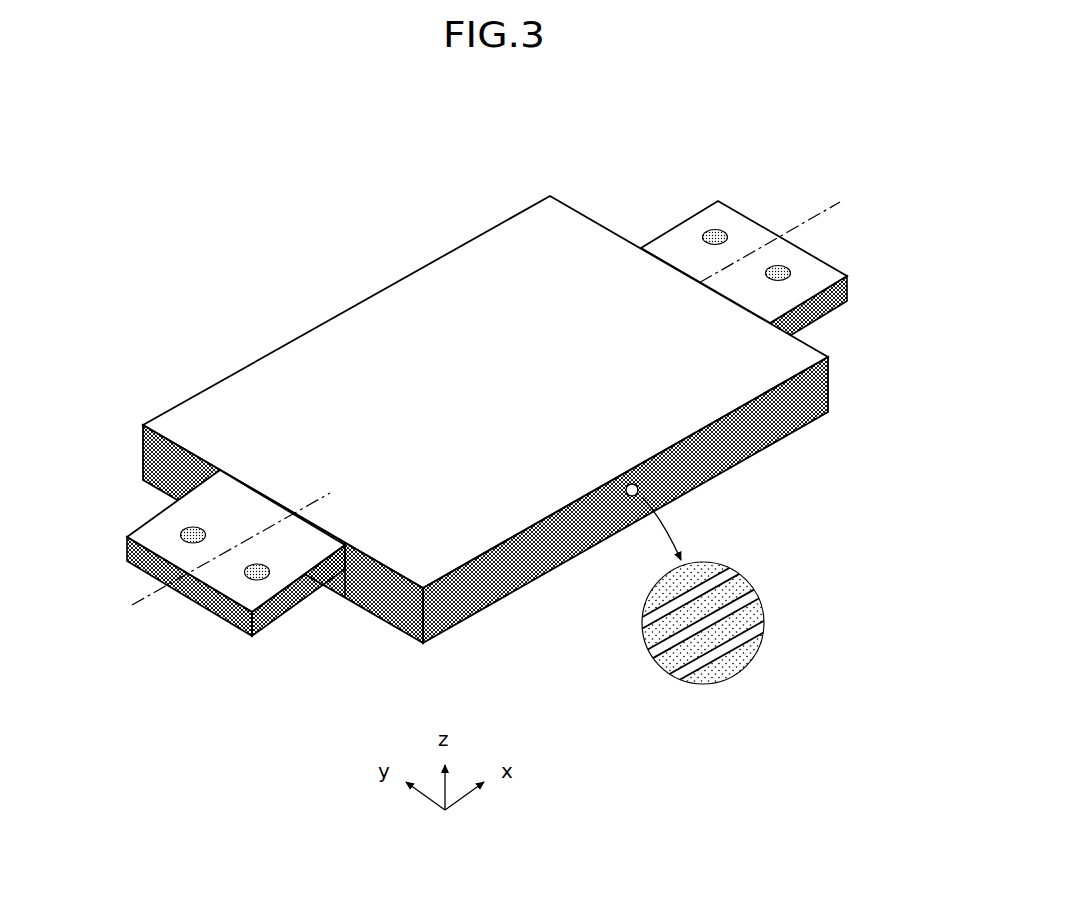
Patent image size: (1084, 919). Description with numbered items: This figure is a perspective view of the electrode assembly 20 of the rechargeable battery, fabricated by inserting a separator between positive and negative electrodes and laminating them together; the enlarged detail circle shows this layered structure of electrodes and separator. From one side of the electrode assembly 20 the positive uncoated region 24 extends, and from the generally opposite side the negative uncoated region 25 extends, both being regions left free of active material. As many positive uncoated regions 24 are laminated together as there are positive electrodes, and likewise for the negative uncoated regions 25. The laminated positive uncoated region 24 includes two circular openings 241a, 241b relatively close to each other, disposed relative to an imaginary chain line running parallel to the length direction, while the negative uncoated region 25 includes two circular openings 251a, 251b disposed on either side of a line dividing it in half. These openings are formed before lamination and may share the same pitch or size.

The electrode assembly 20 is at (487, 417).
The positive uncoated region 24 is at (213, 591).
The opening 241a is at (185, 536).
The opening 241b is at (268, 574).
The negative uncoated region 25 is at (762, 242).
The opening 251a is at (704, 230).
The opening 251b is at (790, 278).